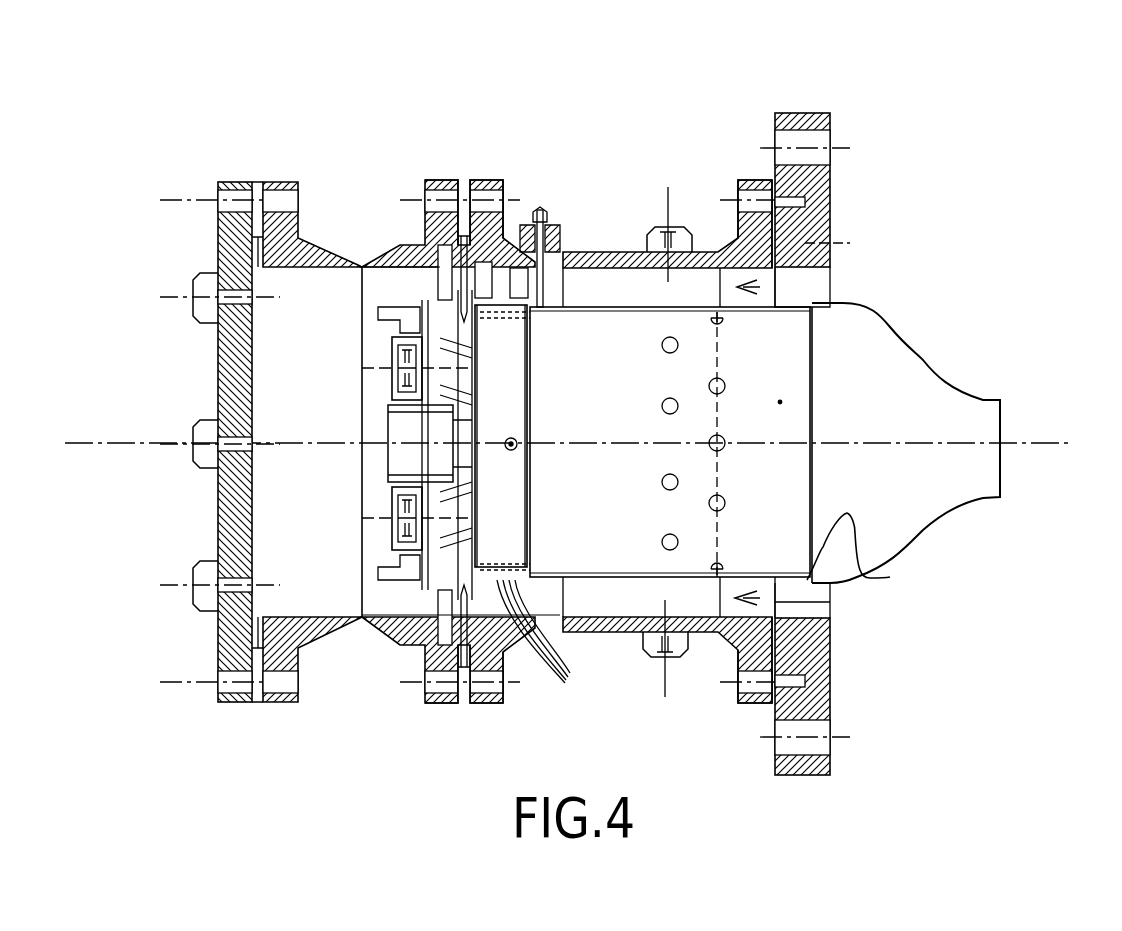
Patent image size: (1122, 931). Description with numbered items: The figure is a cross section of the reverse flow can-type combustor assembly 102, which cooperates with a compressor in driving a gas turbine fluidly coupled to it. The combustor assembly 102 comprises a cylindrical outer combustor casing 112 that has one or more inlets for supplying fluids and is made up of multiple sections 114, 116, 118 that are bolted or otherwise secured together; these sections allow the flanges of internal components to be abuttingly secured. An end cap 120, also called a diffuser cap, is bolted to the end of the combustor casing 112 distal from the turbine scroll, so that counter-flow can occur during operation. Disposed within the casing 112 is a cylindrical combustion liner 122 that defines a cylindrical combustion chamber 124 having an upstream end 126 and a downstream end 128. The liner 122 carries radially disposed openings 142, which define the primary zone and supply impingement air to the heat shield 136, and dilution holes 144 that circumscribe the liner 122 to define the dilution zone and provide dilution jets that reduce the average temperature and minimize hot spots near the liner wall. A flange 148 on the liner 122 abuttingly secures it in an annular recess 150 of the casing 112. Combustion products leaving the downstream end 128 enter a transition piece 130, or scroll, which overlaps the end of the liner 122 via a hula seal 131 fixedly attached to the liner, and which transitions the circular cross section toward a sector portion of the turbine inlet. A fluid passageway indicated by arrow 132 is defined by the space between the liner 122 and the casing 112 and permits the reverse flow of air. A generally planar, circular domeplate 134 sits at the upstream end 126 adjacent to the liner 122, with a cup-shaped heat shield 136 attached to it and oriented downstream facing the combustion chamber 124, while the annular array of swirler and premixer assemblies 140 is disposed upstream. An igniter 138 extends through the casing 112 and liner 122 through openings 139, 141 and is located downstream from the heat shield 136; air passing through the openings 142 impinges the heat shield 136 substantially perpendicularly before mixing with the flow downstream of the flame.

The combustor assembly 102 is at (98, 212).
The outer combustor casing 112 is at (371, 662).
The casing section 114 is at (800, 113).
The casing section 116 is at (620, 673).
The casing section 118 is at (306, 248).
The end cap 120 is at (238, 183).
The combustion liner 122 is at (734, 312).
The combustion chamber 124 is at (645, 527).
The upstream end 126 is at (563, 423).
The downstream end 128 is at (782, 402).
The transition piece 130 is at (912, 337).
The seal 131 is at (872, 580).
The fluid passageway 132 is at (760, 287).
The domeplate 134 is at (478, 568).
The heat shield 136 is at (523, 320).
The igniter 138 is at (548, 218).
The opening 139 is at (550, 268).
The swirler and premixer assemblies 140 is at (368, 477).
The opening 141 is at (545, 307).
The openings 142 is at (566, 683).
The dilution holes 144 is at (670, 404).
The flange 148 is at (540, 300).
The annular recess 150 is at (500, 198).